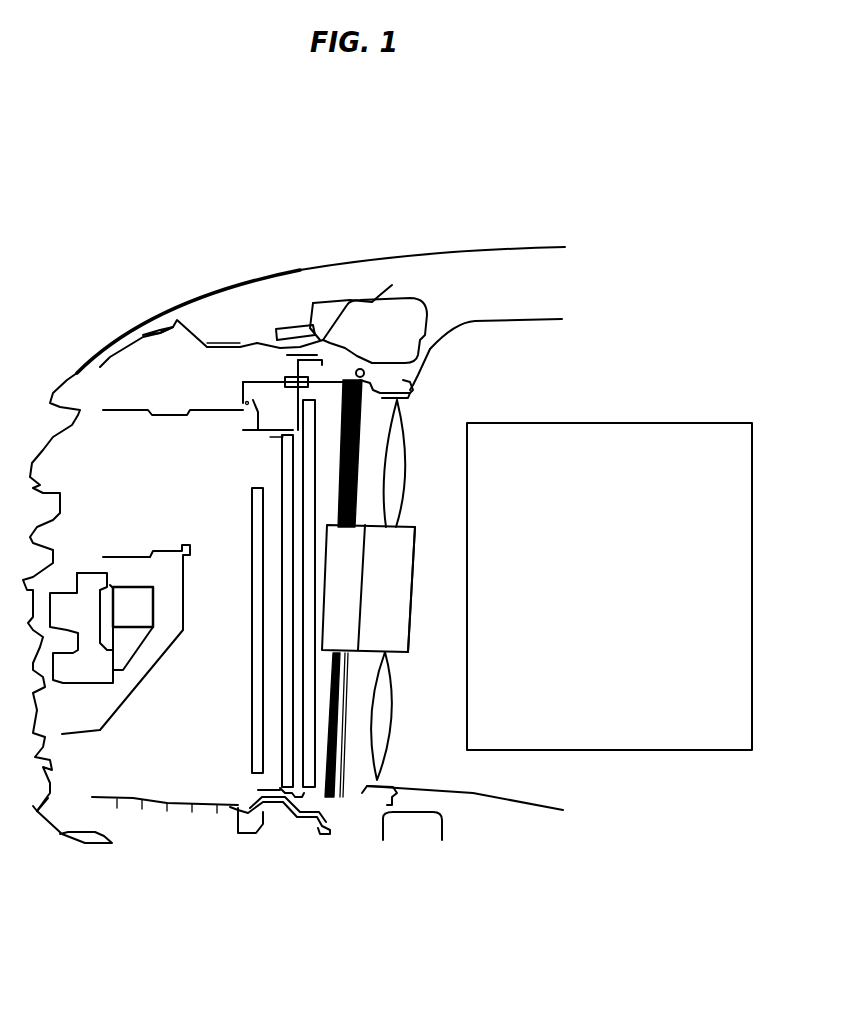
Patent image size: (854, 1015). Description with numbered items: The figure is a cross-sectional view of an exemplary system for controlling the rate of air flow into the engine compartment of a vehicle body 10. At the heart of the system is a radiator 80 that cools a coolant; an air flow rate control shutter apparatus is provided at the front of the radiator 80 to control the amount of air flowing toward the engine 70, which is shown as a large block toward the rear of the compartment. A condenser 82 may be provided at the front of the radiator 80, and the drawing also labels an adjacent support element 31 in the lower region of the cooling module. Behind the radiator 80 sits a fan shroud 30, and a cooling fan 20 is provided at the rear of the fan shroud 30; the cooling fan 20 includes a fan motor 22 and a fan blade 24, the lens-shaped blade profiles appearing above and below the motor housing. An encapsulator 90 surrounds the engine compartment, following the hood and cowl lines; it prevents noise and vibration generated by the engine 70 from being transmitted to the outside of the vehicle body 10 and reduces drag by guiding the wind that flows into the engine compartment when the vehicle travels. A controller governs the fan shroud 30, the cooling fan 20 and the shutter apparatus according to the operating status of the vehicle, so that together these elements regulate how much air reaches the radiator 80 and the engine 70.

The vehicle body 10 is at (328, 841).
The cooling fan 20 is at (403, 662).
The fan motor 22 is at (410, 632).
The fan blade 24 is at (393, 672).
The fan shroud 30 is at (345, 785).
The radiator support 31 is at (310, 792).
The engine 70 is at (693, 745).
The radiator 80 is at (262, 798).
The condenser 82 is at (250, 775).
The encapsulator 90 is at (518, 319).